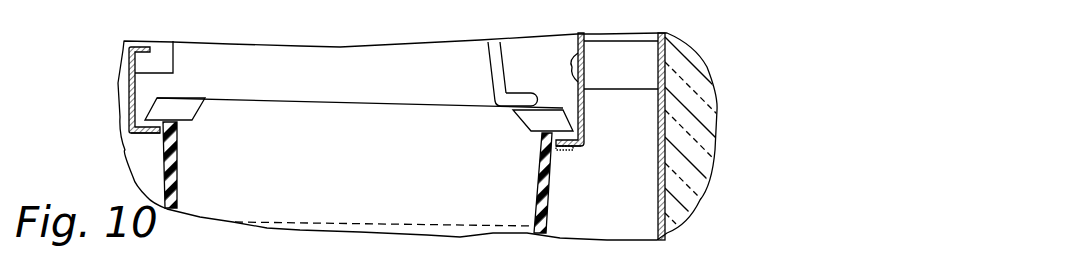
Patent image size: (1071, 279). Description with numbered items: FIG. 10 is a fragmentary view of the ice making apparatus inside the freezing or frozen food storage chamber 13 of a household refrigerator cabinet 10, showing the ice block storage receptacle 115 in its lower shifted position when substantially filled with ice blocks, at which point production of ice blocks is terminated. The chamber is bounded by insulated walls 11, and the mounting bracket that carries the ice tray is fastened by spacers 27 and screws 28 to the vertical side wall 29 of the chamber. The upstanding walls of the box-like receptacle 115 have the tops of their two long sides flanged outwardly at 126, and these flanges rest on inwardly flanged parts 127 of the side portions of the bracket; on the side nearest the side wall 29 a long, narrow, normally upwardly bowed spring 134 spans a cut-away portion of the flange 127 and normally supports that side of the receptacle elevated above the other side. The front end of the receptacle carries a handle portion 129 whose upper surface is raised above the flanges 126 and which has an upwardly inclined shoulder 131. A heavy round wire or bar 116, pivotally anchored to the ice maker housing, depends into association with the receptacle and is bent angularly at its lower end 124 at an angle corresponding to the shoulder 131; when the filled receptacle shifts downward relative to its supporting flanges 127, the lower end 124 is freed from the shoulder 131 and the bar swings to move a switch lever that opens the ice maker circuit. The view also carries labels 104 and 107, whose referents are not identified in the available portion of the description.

The household refrigerator cabinet 10 is at (712, 172).
The insulated walls 11 is at (702, 118).
The freezing or frozen food storage chamber 13 is at (312, 77).
The spacers 27 is at (633, 52).
The screws 28 is at (576, 53).
The vertical side wall 29 is at (660, 224).
The ice block storage receptacle 115 is at (549, 216).
The heavy round wire or bar 116 is at (489, 67).
The angularly bent lower end portion of bar 124 is at (516, 93).
The outward flanges of receptacle 126 is at (146, 117).
The inwardly flanged parts of bracket 127 is at (143, 134).
The handle portion 129 is at (388, 102).
The upwardly inclined shoulder 131 is at (182, 108).
The upwardly bowed spring 134 is at (566, 147).
The member 107 is at (328, 274).
The member 104 is at (382, 274).